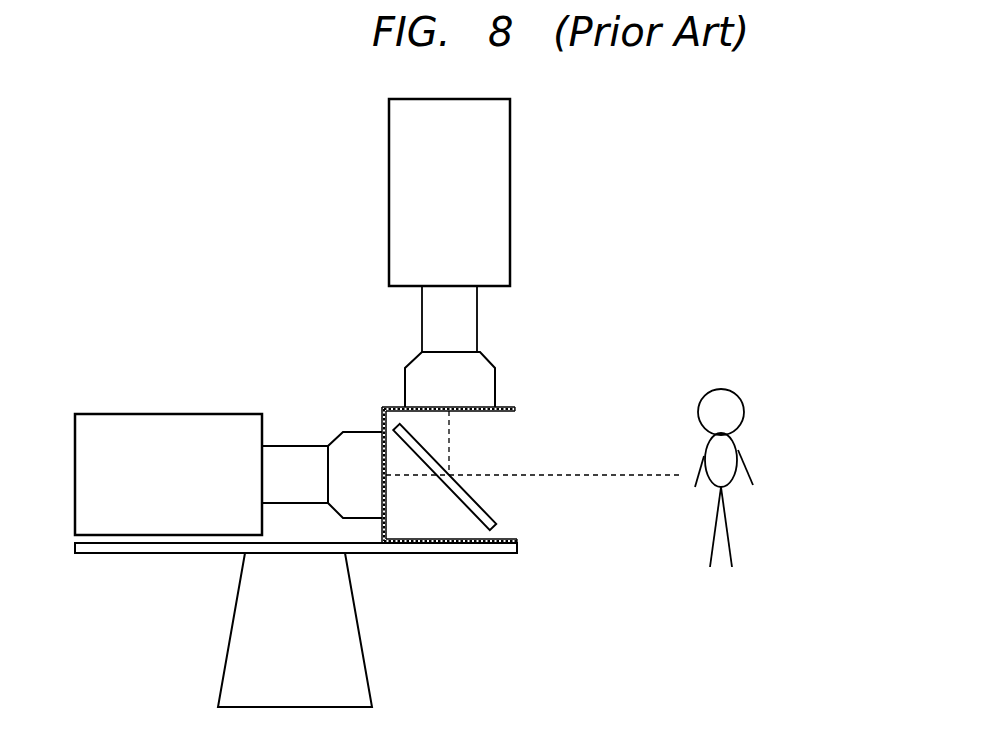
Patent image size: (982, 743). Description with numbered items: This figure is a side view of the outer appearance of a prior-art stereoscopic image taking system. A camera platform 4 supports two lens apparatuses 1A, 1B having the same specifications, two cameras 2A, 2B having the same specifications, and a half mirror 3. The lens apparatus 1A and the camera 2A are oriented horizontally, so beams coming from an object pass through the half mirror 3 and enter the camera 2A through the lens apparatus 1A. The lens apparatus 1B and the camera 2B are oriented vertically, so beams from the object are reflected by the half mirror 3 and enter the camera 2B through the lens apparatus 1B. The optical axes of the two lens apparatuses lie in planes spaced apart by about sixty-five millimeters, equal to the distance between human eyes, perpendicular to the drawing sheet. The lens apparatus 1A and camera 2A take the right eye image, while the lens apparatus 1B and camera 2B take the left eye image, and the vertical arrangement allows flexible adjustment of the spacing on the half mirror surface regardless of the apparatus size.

The camera 2B is at (510, 178).
The lens apparatus 1B is at (495, 377).
The camera 2A is at (158, 414).
The lens apparatus 1A is at (293, 446).
The half mirror 3 is at (482, 503).
The camera platform 4 is at (360, 627).